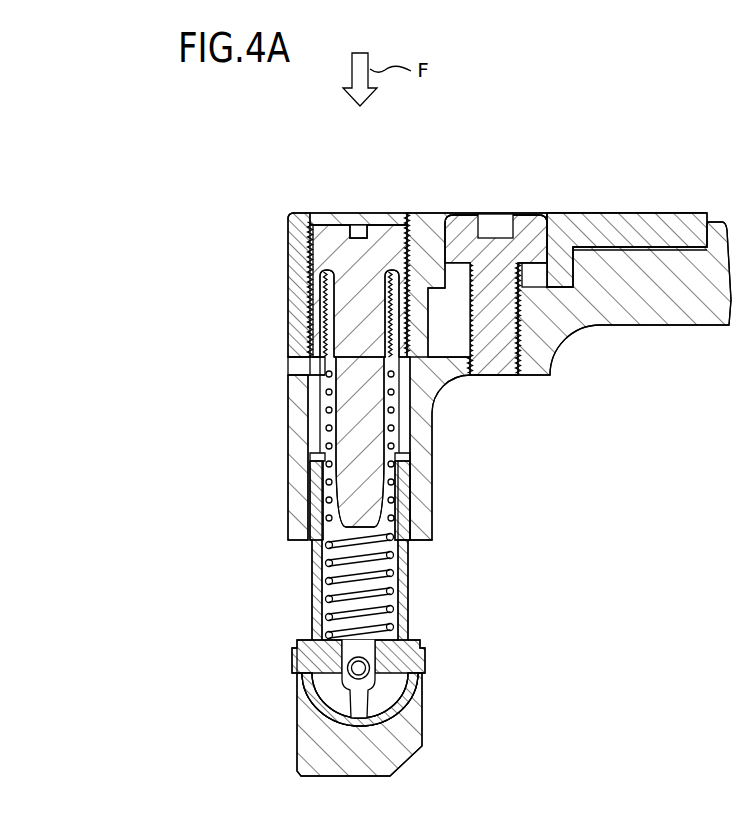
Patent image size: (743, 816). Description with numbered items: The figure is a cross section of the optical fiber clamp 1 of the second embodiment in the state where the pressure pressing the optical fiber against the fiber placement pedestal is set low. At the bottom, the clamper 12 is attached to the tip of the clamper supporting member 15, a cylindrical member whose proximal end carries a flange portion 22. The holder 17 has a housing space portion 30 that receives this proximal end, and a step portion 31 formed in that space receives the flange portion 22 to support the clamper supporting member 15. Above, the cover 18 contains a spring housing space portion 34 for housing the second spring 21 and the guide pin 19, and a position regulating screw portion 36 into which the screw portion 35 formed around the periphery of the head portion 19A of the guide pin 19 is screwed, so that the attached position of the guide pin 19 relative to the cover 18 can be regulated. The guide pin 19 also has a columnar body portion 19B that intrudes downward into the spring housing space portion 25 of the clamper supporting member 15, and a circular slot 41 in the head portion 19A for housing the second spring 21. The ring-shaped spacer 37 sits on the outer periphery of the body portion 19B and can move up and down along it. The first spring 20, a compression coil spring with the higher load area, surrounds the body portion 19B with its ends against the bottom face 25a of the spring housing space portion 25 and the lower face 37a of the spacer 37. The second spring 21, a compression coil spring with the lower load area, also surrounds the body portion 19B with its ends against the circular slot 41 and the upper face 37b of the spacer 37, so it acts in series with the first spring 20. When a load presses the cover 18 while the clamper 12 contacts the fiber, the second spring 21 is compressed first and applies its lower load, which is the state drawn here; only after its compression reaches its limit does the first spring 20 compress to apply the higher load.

The optical fiber clamp 1 is at (592, 458).
The clamper 12 is at (415, 730).
The clamper supporting member 15 is at (411, 563).
The holder 17 is at (437, 432).
The cover 18 is at (600, 213).
The guide pin 19 is at (382, 216).
The head portion 19A is at (345, 226).
The body portion 19B is at (320, 443).
The first spring 20 is at (315, 558).
The second spring 21 is at (345, 330).
The flange portion 22 is at (318, 460).
The spring housing space portion 25 is at (388, 597).
The bottom face 25a is at (345, 627).
The housing space portion 30 is at (326, 409).
The step portion 31 is at (406, 485).
The spring housing space portion 34 is at (446, 292).
The screw portion 35 is at (299, 243).
The position regulating screw portion 36 is at (306, 214).
The spacer 37 is at (300, 360).
The lower face 37a is at (318, 368).
The upper face 37b is at (310, 338).
The circular slot 41 is at (322, 272).